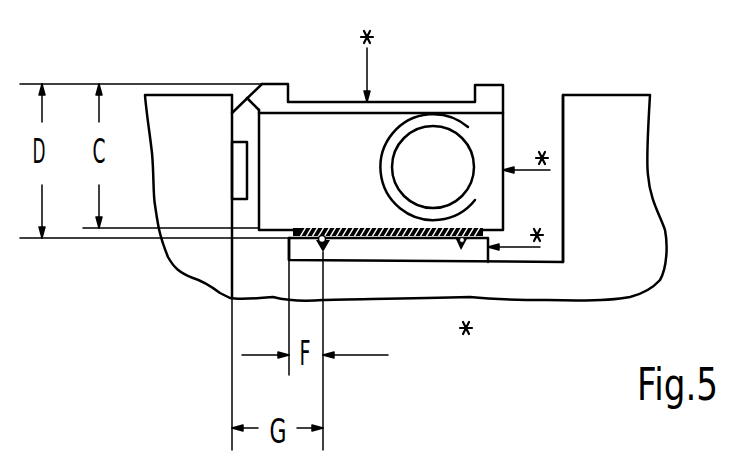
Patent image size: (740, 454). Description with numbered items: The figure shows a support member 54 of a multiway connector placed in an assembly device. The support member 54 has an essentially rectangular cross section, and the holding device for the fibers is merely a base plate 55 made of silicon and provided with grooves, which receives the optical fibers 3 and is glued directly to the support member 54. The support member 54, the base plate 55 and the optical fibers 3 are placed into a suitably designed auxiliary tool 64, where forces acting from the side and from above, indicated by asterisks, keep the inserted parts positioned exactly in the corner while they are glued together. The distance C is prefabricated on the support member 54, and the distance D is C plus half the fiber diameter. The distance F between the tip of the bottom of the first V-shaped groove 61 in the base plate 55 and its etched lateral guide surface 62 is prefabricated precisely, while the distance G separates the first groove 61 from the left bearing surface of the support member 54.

The support member 54 is at (310, 142).
The base plate 55 is at (305, 248).
The etched lateral guide surface 62 is at (288, 245).
The first V-shaped groove 61 is at (327, 241).
The optical fiber 3 is at (463, 248).
The auxiliary tool 64 is at (610, 158).